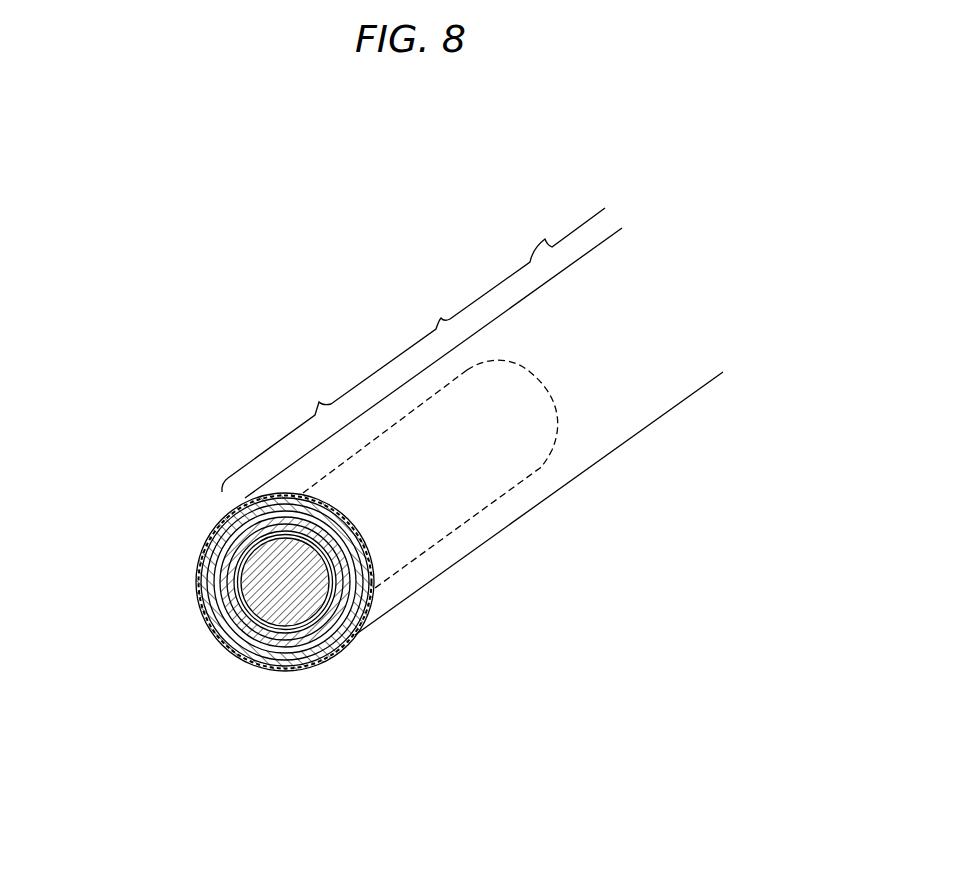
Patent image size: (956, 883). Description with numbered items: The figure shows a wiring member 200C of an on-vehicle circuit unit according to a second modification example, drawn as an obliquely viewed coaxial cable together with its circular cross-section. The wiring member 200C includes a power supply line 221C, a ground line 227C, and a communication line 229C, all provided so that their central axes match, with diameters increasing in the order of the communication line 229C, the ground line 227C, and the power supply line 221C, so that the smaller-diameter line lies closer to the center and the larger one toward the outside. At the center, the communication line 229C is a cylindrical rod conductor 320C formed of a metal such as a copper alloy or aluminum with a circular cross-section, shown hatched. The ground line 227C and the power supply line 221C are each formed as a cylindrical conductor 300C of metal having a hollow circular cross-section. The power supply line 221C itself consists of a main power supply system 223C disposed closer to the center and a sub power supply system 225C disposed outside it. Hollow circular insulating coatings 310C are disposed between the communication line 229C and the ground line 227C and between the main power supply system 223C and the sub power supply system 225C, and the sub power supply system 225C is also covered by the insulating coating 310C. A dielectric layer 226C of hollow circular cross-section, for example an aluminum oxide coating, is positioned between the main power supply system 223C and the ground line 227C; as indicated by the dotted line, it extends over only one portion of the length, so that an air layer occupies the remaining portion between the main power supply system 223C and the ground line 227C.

The wiring member 200C is at (656, 301).
The power supply line 221C is at (637, 481).
The main power supply system 223C is at (340, 514).
The sub power supply system 225C is at (323, 497).
The dielectric layer 226C is at (350, 537).
The ground line 227C is at (362, 560).
The communication line 229C is at (366, 598).
The cylindrical conductor 300C is at (222, 568).
The insulating coating 310C is at (259, 668).
The cylindrical rod conductor 320C is at (204, 616).